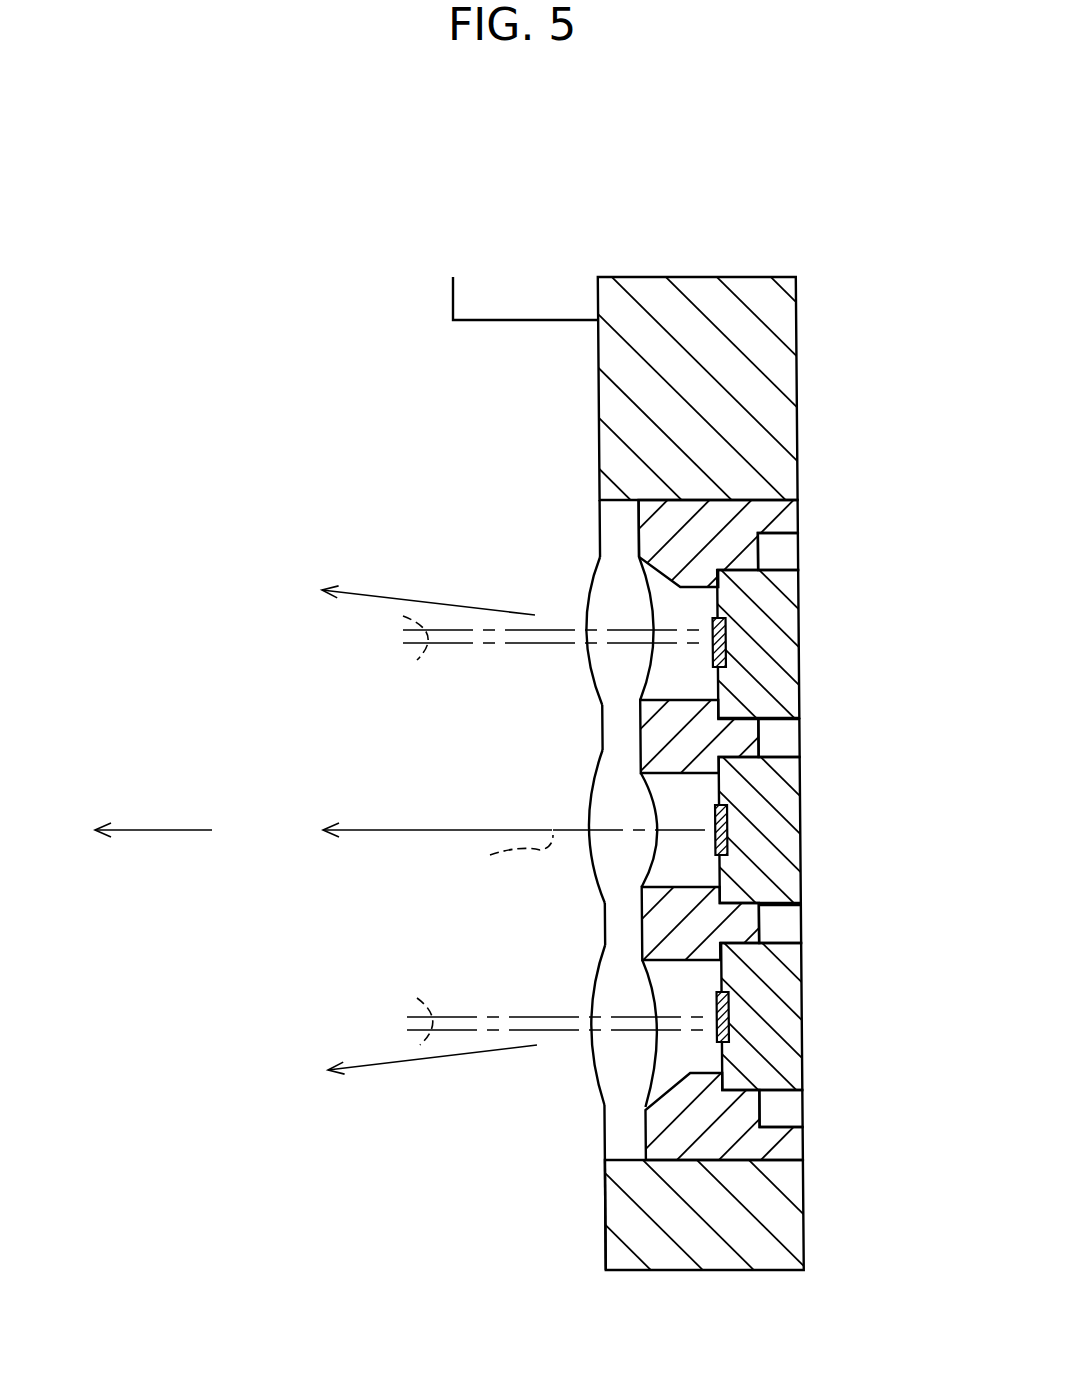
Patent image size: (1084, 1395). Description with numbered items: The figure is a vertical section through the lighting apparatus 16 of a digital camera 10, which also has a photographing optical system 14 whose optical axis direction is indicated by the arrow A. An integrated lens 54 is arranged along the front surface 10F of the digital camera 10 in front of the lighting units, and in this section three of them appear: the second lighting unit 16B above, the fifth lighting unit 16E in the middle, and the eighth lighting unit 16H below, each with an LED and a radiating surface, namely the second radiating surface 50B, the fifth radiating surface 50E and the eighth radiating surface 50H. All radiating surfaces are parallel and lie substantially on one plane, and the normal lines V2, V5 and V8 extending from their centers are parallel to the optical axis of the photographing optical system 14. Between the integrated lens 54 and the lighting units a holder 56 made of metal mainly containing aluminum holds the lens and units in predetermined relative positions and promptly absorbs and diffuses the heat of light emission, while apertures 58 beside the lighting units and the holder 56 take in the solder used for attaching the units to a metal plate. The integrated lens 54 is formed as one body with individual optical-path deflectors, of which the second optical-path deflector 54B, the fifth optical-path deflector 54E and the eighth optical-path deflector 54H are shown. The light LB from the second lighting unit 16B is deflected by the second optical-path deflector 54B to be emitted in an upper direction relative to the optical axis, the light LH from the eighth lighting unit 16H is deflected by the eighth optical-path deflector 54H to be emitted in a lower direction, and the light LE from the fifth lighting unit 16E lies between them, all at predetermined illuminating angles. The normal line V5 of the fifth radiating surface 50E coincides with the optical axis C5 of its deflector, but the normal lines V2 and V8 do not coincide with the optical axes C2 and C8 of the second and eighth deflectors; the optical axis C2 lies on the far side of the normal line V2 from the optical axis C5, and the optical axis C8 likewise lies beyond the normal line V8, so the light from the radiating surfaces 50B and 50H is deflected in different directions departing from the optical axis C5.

The digital camera 10 is at (312, 437).
The front surface 10F is at (605, 1207).
The photographing optical system 14 is at (430, 298).
The lighting apparatus 16 is at (578, 492).
The second lighting unit 16B is at (767, 600).
The fifth lighting unit 16E is at (768, 790).
The eighth lighting unit 16H is at (772, 980).
The second radiating surface 50B is at (727, 647).
The fifth radiating surface 50E is at (728, 837).
The eighth radiating surface 50H is at (731, 1020).
The integrated lens 54 is at (623, 1143).
The second optical-path deflector 54B is at (593, 575).
The fifth optical-path deflector 54E is at (590, 788).
The eighth optical-path deflector 54H is at (590, 992).
The holder 56 is at (717, 537).
The aperture 58 is at (781, 552).
The light from the second lighting unit LB is at (404, 591).
The light from the fifth lighting unit LE is at (413, 831).
The light from the eighth lighting unit LH is at (407, 1069).
The arrow A is at (160, 830).
The optical axis of the second optical-path deflector C2 is at (400, 621).
The normal line of the second radiating surface V2 is at (416, 662).
The optical axis of the fifth optical-path deflector C5 is at (544, 857).
The normal line of the fifth radiating surface V5 is at (521, 845).
The optical axis of the eighth optical-path deflector C8 is at (403, 1040).
The normal line of the eighth radiating surface V8 is at (417, 998).